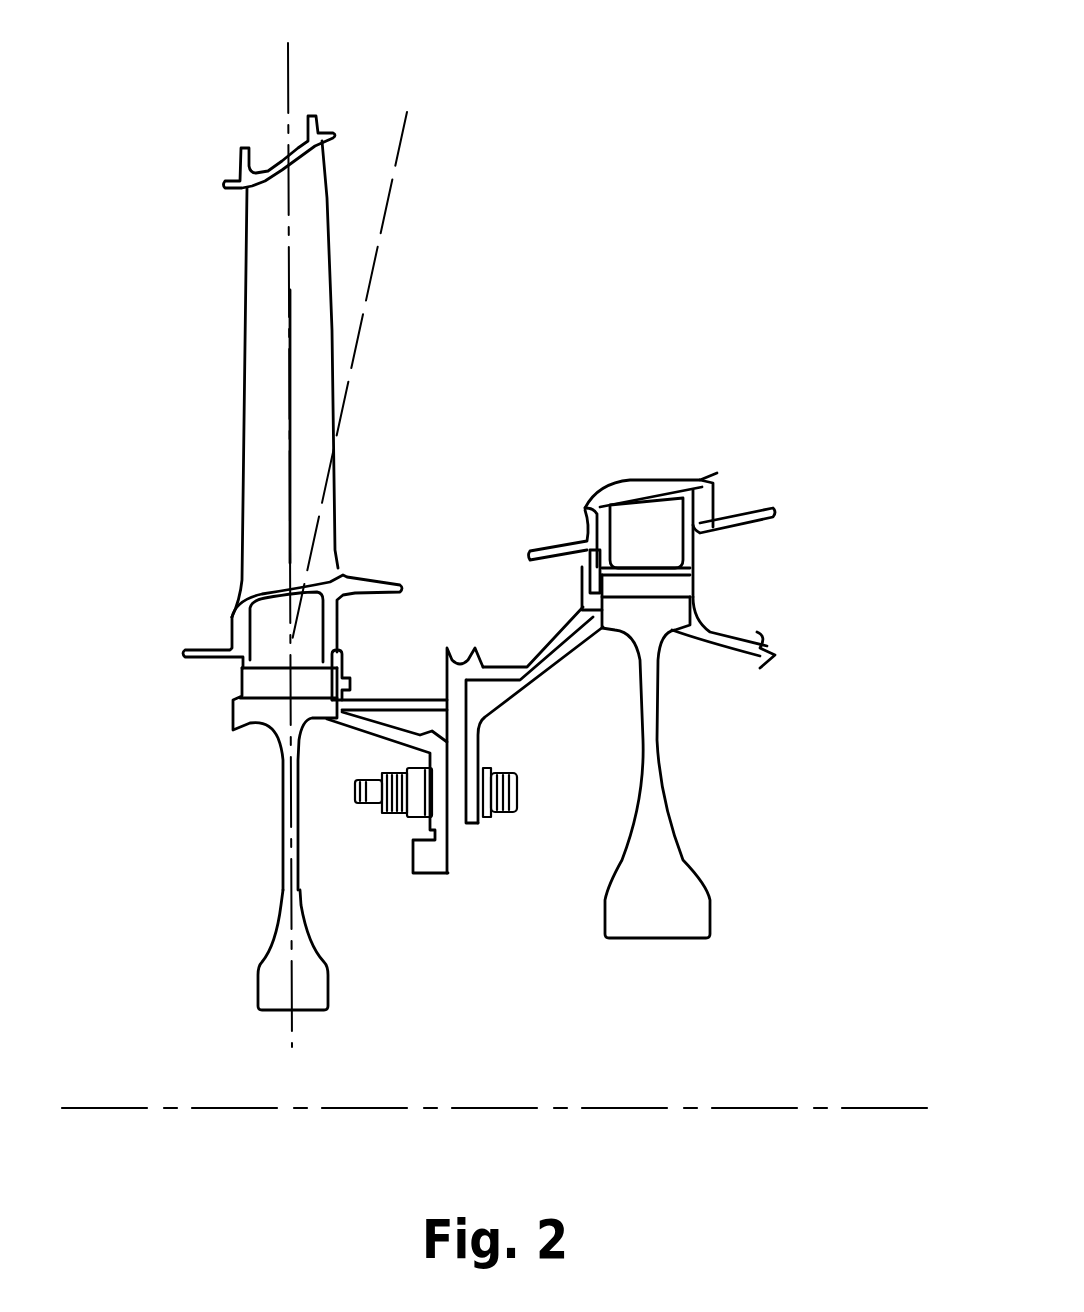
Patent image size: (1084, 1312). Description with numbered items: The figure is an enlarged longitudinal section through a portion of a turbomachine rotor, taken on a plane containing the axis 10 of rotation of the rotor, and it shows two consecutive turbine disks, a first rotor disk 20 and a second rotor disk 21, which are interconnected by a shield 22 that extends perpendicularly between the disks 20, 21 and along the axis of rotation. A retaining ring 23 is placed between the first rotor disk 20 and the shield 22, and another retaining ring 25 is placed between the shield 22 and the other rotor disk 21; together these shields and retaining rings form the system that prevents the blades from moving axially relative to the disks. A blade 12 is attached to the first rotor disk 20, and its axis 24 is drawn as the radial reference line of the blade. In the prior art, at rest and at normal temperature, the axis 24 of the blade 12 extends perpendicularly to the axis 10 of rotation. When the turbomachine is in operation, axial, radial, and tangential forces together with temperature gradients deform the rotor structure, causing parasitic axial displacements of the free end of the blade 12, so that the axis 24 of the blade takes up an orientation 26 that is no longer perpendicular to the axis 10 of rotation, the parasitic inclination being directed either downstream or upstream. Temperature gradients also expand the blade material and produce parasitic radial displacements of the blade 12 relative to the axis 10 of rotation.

The axis of rotation 10 is at (615, 1106).
The blade 12 is at (330, 233).
The first rotor disk 20 is at (285, 1012).
The second rotor disk 21 is at (667, 939).
The shield 22 is at (553, 633).
The retaining ring 23 is at (345, 672).
The axis of the blade 24 is at (290, 292).
The retaining ring 25 is at (577, 543).
The orientation of the blade axis 26 is at (403, 128).